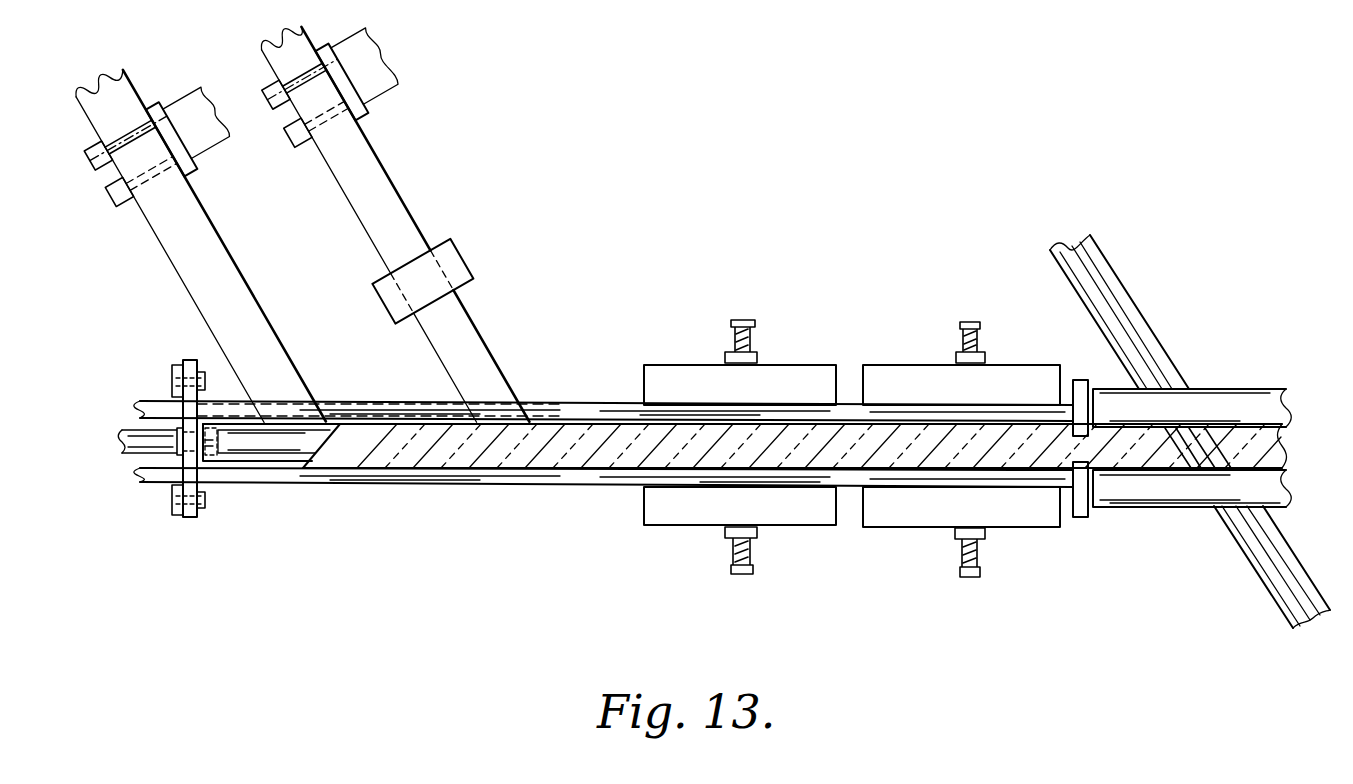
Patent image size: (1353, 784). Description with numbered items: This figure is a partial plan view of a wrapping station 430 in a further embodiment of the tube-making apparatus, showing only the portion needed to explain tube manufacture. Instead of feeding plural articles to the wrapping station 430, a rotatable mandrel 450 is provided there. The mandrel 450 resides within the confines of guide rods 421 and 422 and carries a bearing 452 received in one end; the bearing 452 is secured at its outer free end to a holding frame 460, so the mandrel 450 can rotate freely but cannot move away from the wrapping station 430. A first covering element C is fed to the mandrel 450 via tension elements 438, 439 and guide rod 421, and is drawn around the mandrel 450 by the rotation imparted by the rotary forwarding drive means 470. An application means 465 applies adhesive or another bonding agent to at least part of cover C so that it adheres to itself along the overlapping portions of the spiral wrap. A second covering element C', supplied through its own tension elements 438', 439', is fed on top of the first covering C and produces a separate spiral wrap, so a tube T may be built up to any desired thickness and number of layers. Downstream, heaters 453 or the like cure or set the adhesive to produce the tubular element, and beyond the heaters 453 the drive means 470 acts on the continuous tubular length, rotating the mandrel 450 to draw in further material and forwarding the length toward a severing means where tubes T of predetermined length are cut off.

The guide rod 421 is at (545, 404).
The guide rod 422 is at (562, 478).
The wrapping station 430 is at (344, 554).
The rotatable mandrel 450 is at (280, 450).
The bearing 452 is at (218, 470).
The holding frame 460 is at (185, 478).
The heaters 453 is at (698, 519).
The rotary forwarding drive means 470 is at (1172, 536).
The tube T is at (1288, 445).
The covering element C is at (226, 241).
The second covering element C' is at (418, 222).
The tension element 438 is at (94, 147).
The tension element 439 is at (110, 189).
The tension element 438' is at (269, 80).
The tension element 439' is at (287, 137).
The application means 465 is at (453, 262).